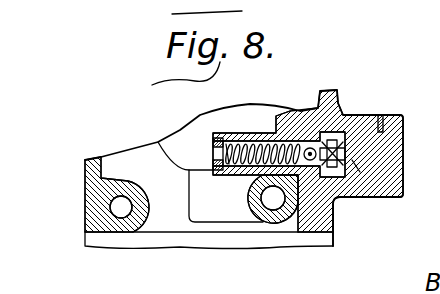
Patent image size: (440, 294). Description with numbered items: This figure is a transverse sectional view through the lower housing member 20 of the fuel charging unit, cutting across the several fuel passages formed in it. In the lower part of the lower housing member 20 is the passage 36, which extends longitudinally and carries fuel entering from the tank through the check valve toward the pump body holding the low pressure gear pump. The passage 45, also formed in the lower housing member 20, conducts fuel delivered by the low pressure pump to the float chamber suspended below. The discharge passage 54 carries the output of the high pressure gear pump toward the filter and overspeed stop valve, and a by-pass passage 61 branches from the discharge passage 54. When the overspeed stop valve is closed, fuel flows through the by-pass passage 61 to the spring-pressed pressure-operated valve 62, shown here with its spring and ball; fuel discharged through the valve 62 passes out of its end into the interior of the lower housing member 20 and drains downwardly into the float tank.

The lower housing member 20 is at (337, 93).
The passage 36 is at (123, 205).
The passage 45 is at (273, 208).
The discharge passage 54 is at (380, 176).
The by-pass passage 61 is at (333, 229).
The spring-pressed pressure-operated valve 62 is at (313, 141).